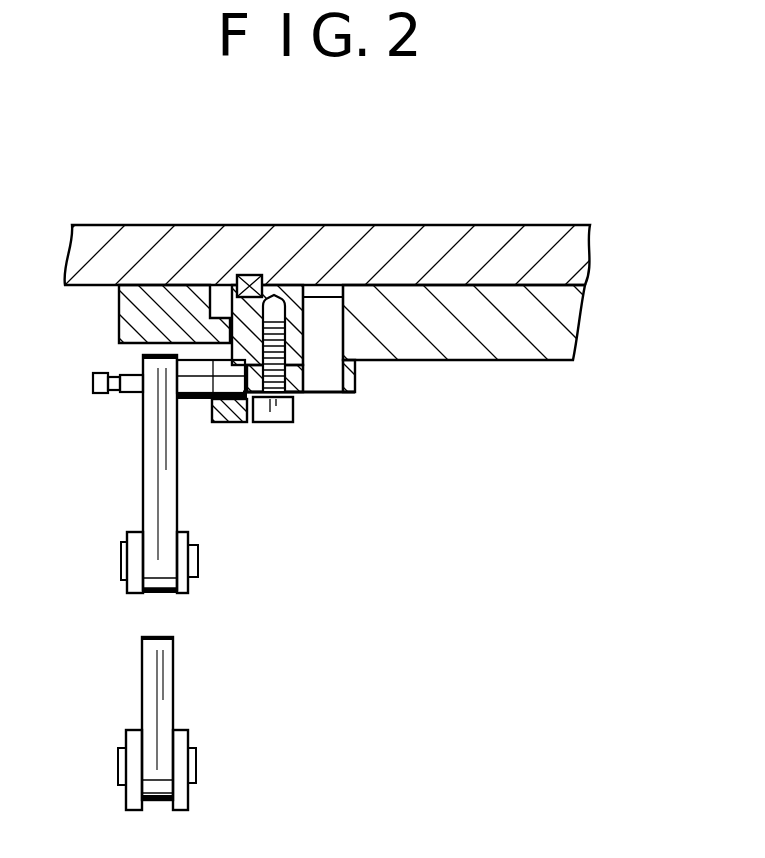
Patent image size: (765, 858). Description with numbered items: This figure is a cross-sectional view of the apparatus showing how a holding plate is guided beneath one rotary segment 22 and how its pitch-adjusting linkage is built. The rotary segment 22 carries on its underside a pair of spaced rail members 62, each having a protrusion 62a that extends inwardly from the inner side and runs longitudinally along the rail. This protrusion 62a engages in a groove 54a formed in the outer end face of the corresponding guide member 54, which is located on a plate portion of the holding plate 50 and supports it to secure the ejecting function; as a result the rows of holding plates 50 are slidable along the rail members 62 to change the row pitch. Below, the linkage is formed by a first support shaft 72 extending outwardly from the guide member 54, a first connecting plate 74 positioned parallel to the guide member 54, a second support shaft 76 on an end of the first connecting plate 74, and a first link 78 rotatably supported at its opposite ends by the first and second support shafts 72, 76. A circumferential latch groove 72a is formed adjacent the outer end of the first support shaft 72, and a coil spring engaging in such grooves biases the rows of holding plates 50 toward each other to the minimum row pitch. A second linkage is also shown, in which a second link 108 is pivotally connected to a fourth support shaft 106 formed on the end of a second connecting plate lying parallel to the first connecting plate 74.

The rotary segment 22 is at (463, 250).
The holding plate 50 is at (460, 345).
The guide member 54 is at (300, 293).
The groove 54a is at (240, 300).
The rail member 62 is at (142, 298).
The protrusion 62a is at (232, 423).
The first support shaft 72 is at (131, 403).
The circumferential latch groove 72a is at (112, 402).
The first connecting plate 74 is at (137, 585).
The second support shaft 76 is at (200, 562).
The first link 78 is at (150, 503).
The fourth support shaft 106 is at (198, 767).
The second link 108 is at (152, 690).